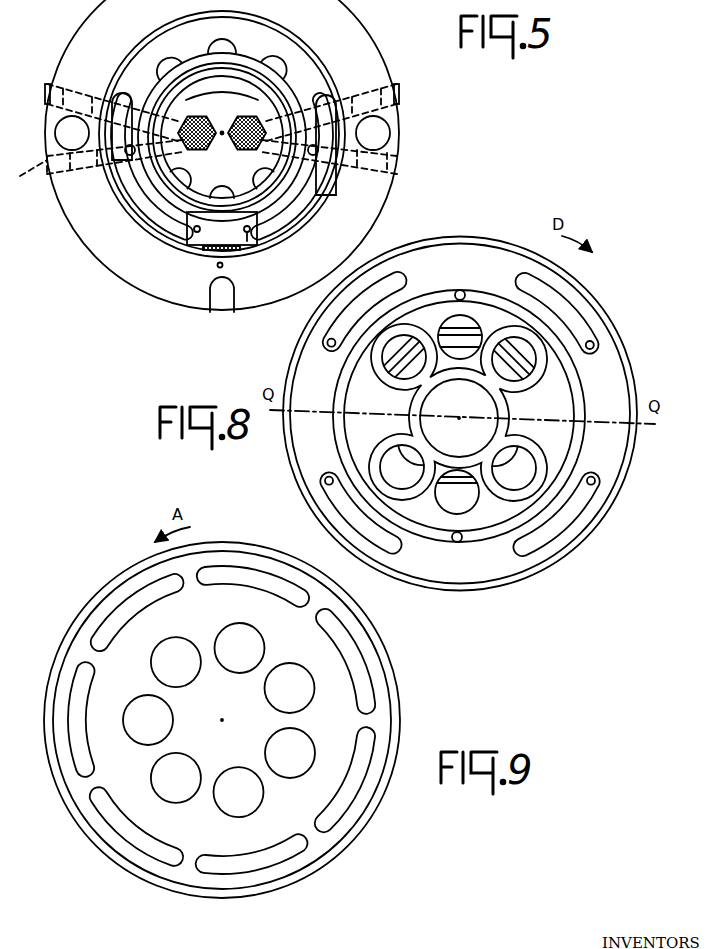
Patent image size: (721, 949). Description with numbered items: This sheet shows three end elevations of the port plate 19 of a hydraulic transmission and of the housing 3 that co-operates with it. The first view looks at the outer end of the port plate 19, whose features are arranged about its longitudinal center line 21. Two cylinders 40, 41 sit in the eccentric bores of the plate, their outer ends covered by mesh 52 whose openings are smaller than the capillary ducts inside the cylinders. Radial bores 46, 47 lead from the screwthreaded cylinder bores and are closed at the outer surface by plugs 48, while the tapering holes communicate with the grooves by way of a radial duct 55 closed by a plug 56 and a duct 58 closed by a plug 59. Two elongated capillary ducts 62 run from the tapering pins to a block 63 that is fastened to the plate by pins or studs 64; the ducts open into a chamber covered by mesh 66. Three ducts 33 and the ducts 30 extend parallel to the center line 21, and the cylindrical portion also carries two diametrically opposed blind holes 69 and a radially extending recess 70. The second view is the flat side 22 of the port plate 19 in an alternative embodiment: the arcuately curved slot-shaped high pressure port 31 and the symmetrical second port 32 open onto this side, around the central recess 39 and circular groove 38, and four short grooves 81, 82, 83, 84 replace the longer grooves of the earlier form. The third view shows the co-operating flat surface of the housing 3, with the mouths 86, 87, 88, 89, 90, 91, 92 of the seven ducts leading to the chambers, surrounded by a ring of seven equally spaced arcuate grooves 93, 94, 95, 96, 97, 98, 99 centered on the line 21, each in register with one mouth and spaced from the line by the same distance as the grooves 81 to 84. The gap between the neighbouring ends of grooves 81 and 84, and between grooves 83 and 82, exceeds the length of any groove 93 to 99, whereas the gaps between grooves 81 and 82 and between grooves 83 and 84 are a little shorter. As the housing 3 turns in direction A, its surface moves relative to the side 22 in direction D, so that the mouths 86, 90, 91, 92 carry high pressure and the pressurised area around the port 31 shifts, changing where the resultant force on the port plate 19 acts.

In FIG. 9, the housing 3 is at (396, 712).
In FIG. 8, the port plate 19 is at (489, 238).
In FIG. 8, the longitudinal axis or center line 21 is at (462, 420).
In FIG. 9, the longitudinal axis or center line 21 is at (236, 724).
In FIG. 8, the side 22 is at (566, 292).
In FIG. 5, the ducts 30 is at (265, 178).
In FIG. 8, the port 31 is at (522, 374).
In FIG. 8, the second port 32 is at (390, 444).
In FIG. 5, the ducts 33 is at (232, 46).
In FIG. 8, the circular groove 38 is at (580, 398).
In FIG. 8, the central recess 39 is at (432, 406).
In FIG. 5, the cylinder 40 is at (203, 150).
In FIG. 5, the cylinder 41 is at (246, 114).
In FIG. 5, the bore 46 is at (112, 106).
In FIG. 5, the bore 47 is at (368, 100).
In FIG. 5, the plugs 48 is at (47, 84).
In FIG. 5, the mesh 52 is at (246, 98).
In FIG. 5, the radial duct 55 is at (95, 166).
In FIG. 5, the plug 56 is at (48, 170).
In FIG. 5, the duct 58 is at (334, 168).
In FIG. 5, the plug 59 is at (392, 172).
In FIG. 5, the capillary ducts 62 is at (140, 210).
In FIG. 5, the block 63 is at (198, 234).
In FIG. 5, the pins or studs 64 is at (250, 243).
In FIG. 5, the mesh 66 is at (212, 250).
In FIG. 5, the blind holes 69 is at (72, 133).
In FIG. 5, the recess 70 is at (222, 300).
In FIG. 8, the groove 81 is at (334, 472).
In FIG. 8, the groove 82 is at (526, 550).
In FIG. 8, the groove 83 is at (585, 336).
In FIG. 8, the groove 84 is at (396, 284).
In FIG. 9, the mouth 86 is at (250, 636).
In FIG. 9, the mouth 87 is at (302, 678).
In FIG. 9, the mouth 88 is at (300, 744).
In FIG. 9, the mouth 89 is at (252, 798).
In FIG. 9, the mouth 90 is at (186, 792).
In FIG. 9, the mouth 91 is at (138, 730).
In FIG. 9, the mouth 92 is at (158, 662).
In FIG. 9, the groove 93 is at (250, 570).
In FIG. 9, the groove 94 is at (362, 658).
In FIG. 9, the groove 95 is at (362, 778).
In FIG. 9, the groove 96 is at (278, 862).
In FIG. 9, the groove 97 is at (142, 858).
In FIG. 9, the groove 98 is at (80, 758).
In FIG. 9, the groove 99 is at (134, 598).